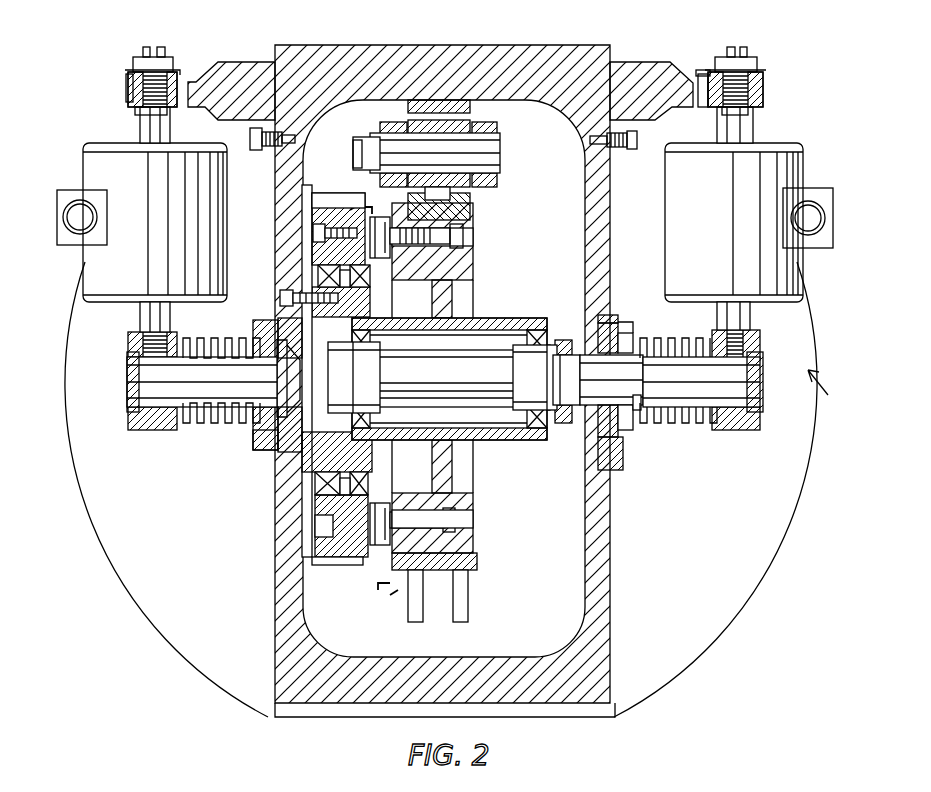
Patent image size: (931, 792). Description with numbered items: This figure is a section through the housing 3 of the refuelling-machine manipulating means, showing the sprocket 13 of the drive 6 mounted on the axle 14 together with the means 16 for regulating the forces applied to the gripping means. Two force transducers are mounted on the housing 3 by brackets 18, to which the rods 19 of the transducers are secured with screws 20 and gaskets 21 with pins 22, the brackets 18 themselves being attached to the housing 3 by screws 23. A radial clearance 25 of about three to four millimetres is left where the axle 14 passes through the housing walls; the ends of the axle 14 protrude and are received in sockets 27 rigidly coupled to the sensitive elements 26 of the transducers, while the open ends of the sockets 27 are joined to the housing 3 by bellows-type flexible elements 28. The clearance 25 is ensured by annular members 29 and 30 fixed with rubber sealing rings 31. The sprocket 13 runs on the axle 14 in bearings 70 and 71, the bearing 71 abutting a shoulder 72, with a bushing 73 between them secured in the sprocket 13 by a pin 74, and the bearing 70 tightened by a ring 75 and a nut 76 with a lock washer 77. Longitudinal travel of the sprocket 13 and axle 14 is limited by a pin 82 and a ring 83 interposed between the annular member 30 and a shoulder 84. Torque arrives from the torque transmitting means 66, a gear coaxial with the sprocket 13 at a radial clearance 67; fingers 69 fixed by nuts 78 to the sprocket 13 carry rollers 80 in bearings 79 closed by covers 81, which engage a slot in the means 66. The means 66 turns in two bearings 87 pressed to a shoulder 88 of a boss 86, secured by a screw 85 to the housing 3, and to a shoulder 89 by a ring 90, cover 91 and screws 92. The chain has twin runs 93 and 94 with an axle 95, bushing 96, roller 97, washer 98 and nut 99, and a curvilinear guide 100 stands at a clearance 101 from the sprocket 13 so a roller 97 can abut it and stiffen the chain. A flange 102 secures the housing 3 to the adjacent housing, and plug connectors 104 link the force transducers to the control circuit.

The housing 3 is at (606, 528).
The drive 6 is at (506, 236).
The sprocket 13 is at (460, 264).
The axle 14 is at (498, 374).
The means for regulating the forces applied to the gripping means 16 is at (832, 391).
The brackets 18 is at (645, 62).
The rod 19 is at (745, 130).
The screws 20 is at (735, 78).
The gaskets 21 is at (763, 78).
The pins 22 is at (703, 72).
The screws 23 is at (633, 142).
The radial clearance 25 is at (634, 424).
The sensitive elements 26 is at (742, 320).
The sockets 27 is at (744, 430).
The flexible elements 28 is at (684, 422).
The annular member 29 is at (620, 328).
The annular member 30 is at (620, 468).
The rubber sealing rings 31 is at (606, 318).
The torque transmitting means 66 is at (314, 559).
The radial clearance 67 is at (300, 442).
The fingers 69 is at (438, 562).
The bearing 70 is at (526, 323).
The bearing 71 is at (372, 416).
The shoulder 72 is at (345, 364).
The bushing 73 is at (490, 318).
The pin 74 is at (492, 442).
The ring 75 is at (538, 432).
The nut 76 is at (556, 424).
The lock washer 77 is at (573, 424).
The nut 78 is at (456, 522).
The bearings 79 is at (356, 556).
The roller 80 is at (384, 546).
The cover 81 is at (380, 518).
The pin 82 is at (266, 342).
The ring 83 is at (560, 342).
The shoulder 84 is at (588, 373).
The screw 85 is at (284, 297).
The boss 86 is at (330, 272).
The bearings 87 is at (320, 483).
The shoulder 88 is at (368, 294).
The shoulder 89 is at (398, 507).
The ring 90 is at (350, 486).
The cover 91 is at (320, 227).
The screws 92 is at (304, 202).
The run 93 is at (476, 190).
The run 94 is at (500, 128).
The axle 95 is at (500, 156).
The bushing 96 is at (405, 118).
The roller 97 is at (442, 102).
The washer 98 is at (395, 127).
The nut 99 is at (362, 151).
The curvilinear guide 100 is at (468, 100).
The clearance 101 is at (470, 108).
The flange 102 is at (742, 592).
The plug connectors 104 is at (828, 236).